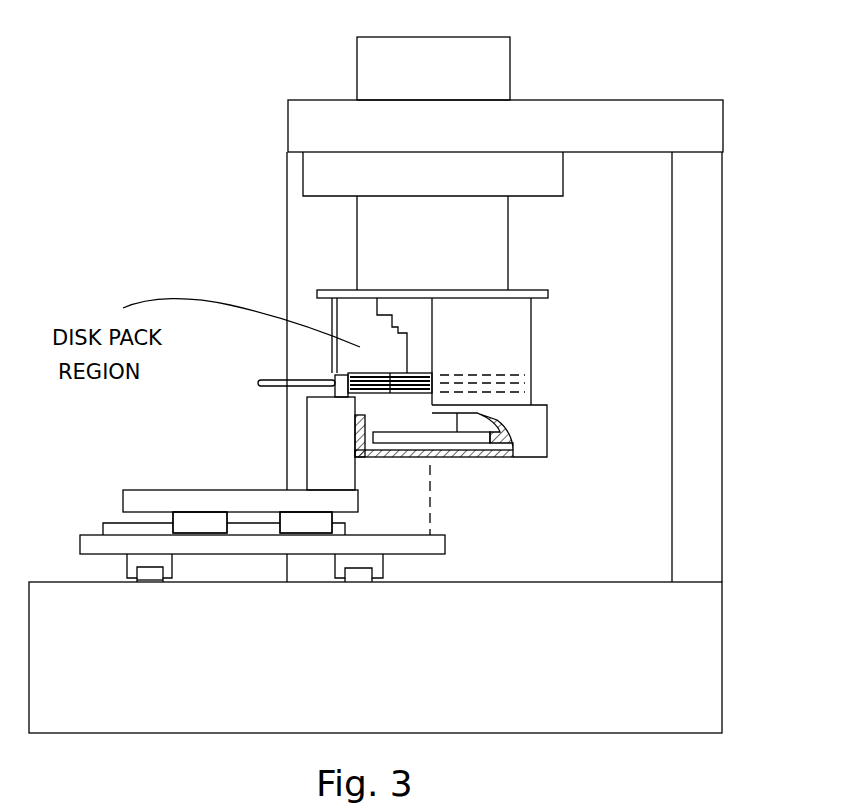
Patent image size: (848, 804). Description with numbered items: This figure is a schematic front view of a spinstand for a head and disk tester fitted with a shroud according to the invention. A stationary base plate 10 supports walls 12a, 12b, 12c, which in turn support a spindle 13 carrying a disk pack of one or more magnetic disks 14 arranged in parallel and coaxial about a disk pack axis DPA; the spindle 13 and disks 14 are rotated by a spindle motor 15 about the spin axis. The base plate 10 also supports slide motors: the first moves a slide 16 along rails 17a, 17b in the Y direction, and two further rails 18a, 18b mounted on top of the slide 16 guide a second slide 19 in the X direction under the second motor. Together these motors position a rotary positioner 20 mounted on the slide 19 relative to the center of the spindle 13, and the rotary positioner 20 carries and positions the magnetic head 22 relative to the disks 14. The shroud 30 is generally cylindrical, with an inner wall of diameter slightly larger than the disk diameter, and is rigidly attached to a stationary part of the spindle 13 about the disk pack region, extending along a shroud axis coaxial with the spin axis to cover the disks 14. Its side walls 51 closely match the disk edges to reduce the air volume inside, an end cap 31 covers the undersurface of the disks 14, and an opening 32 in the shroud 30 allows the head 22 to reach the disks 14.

The base plate 10 is at (694, 680).
The wall 12a is at (693, 387).
The wall 12b is at (312, 273).
The wall 12c is at (583, 126).
The spindle 13 is at (483, 250).
The magnetic disk 14 is at (463, 386).
The spindle motor 15 is at (380, 68).
The slide 16 is at (97, 545).
The rail 17a is at (148, 573).
The rail 17b is at (360, 577).
The rail 18a is at (125, 532).
The rail 18b is at (252, 522).
The second slide 19 is at (245, 500).
The rotary positioner 20 is at (330, 457).
The magnetic head 22 is at (413, 375).
The shroud 30 is at (560, 472).
The end cap 31 is at (440, 458).
The opening 32 is at (346, 355).
The side wall 51 is at (497, 333).
The disk pack axis DPA is at (432, 522).